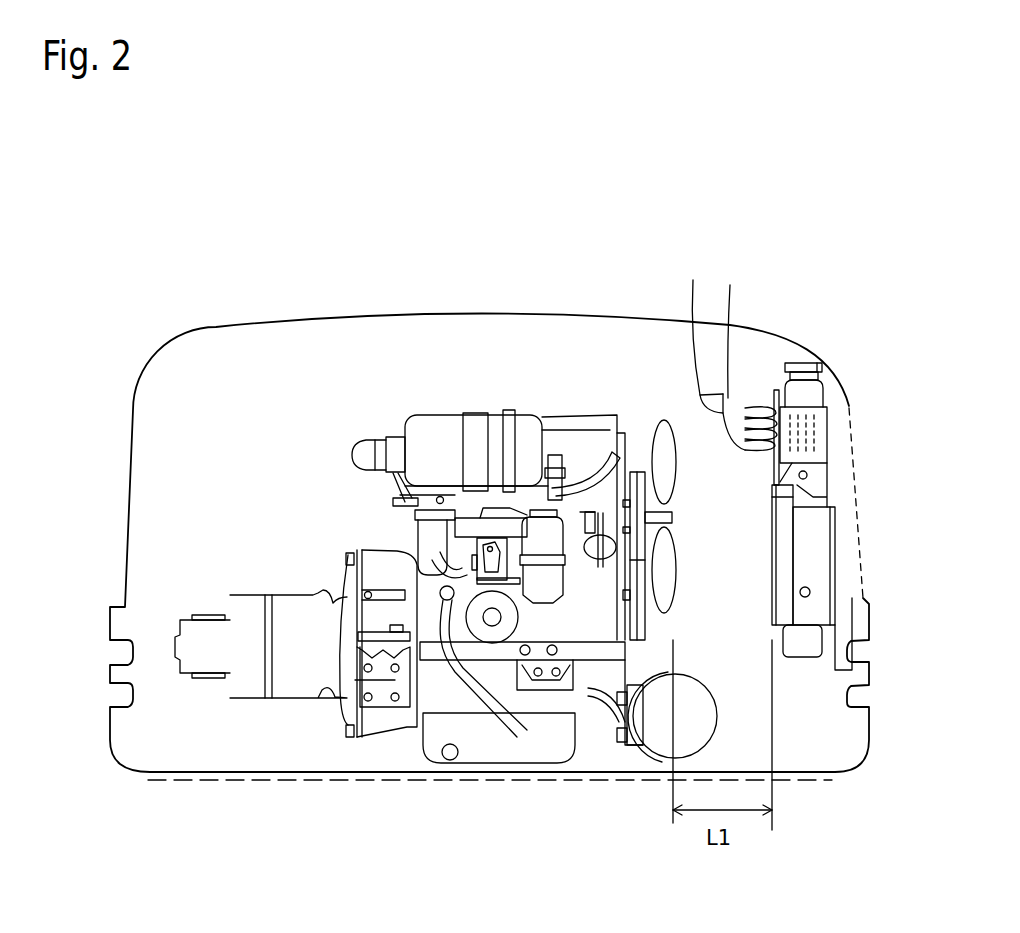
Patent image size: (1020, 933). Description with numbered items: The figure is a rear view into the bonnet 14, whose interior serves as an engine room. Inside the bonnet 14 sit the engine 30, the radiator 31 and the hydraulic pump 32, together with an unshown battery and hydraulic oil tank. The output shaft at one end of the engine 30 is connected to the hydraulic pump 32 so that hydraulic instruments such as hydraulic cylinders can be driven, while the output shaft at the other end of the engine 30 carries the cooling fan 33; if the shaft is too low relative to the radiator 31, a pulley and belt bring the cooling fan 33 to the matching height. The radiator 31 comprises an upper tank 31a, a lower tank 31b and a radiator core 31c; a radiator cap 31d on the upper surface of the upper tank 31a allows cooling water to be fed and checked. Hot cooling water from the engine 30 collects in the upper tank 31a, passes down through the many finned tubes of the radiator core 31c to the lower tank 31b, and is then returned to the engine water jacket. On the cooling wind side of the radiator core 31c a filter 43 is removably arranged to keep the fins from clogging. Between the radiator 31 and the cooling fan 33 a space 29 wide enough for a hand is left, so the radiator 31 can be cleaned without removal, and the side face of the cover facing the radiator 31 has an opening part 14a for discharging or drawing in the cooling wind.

The bonnet 14 is at (511, 496).
The opening part 14a is at (863, 600).
The space 29 is at (739, 541).
The engine 30 is at (446, 480).
The radiator 31 is at (838, 496).
The upper tank 31a is at (818, 398).
The lower tank 31b is at (803, 648).
The radiator core 31c is at (827, 463).
The radiator cap 31d is at (805, 370).
The hydraulic pump 32 is at (287, 607).
The cooling fan 33 is at (658, 420).
The filter 43 is at (748, 392).